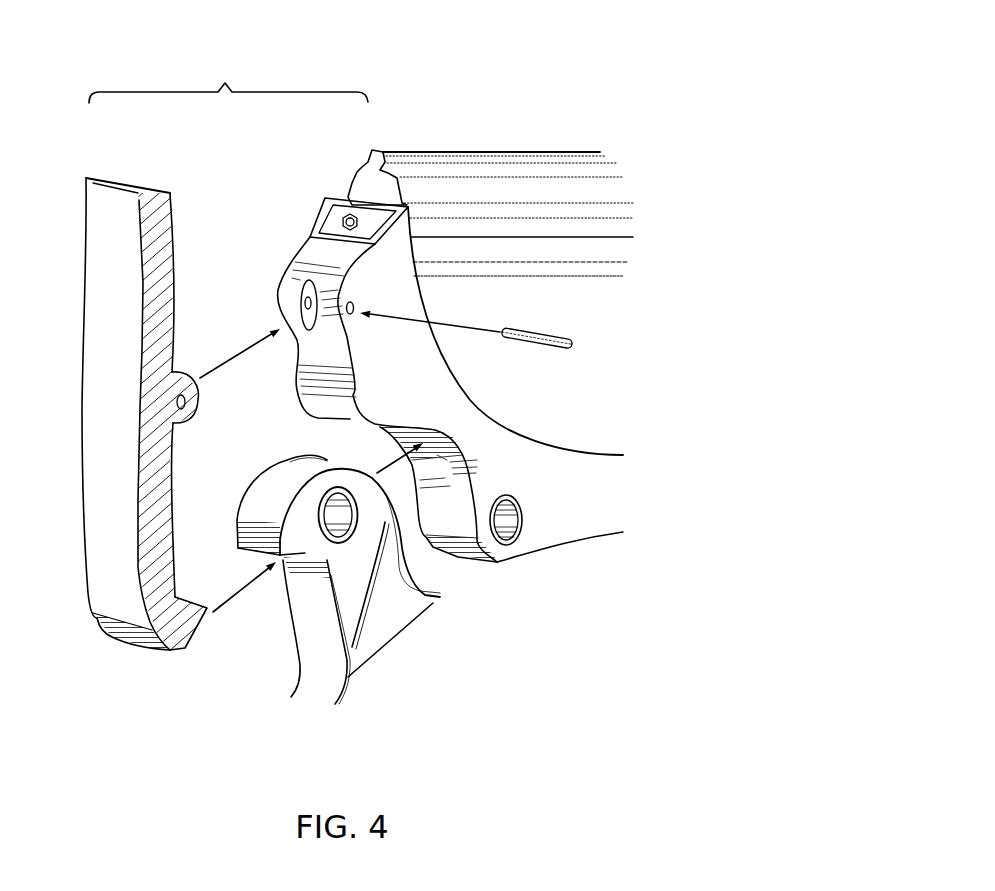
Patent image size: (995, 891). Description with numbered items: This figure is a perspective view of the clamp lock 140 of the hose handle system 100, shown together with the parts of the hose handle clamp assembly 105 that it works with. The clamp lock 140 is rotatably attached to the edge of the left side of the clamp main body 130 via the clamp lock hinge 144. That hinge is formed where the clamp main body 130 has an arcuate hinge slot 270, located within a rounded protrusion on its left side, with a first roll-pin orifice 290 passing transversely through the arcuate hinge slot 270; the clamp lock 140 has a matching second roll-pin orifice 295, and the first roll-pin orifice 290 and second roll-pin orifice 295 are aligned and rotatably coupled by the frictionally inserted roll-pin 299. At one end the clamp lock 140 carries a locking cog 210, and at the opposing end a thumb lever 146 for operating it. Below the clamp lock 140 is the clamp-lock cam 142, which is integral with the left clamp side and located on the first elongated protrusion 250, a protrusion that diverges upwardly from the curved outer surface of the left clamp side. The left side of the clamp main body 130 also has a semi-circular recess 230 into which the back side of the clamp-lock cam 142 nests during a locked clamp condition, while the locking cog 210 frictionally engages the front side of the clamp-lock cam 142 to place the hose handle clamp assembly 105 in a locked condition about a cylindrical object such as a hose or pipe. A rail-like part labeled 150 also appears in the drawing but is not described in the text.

The hose handle system 100 is at (536, 68).
The hose handle clamp assembly 105 is at (561, 97).
The clamp main body 130 is at (487, 437).
The clamp lock 140 is at (93, 407).
The clamp-lock cam 142 is at (262, 508).
The clamp lock hinge 144 is at (228, 82).
The thumb lever 146 is at (100, 222).
The rail 150 is at (448, 148).
The locking cog 210 is at (193, 627).
The semi-circular recess 230 is at (432, 470).
The first elongated protrusion 250 is at (377, 593).
The arcuate hinge slot 270 is at (316, 285).
The first roll-pin orifice 290 is at (350, 318).
The second roll-pin orifice 295 is at (183, 407).
The roll-pin 299 is at (578, 343).